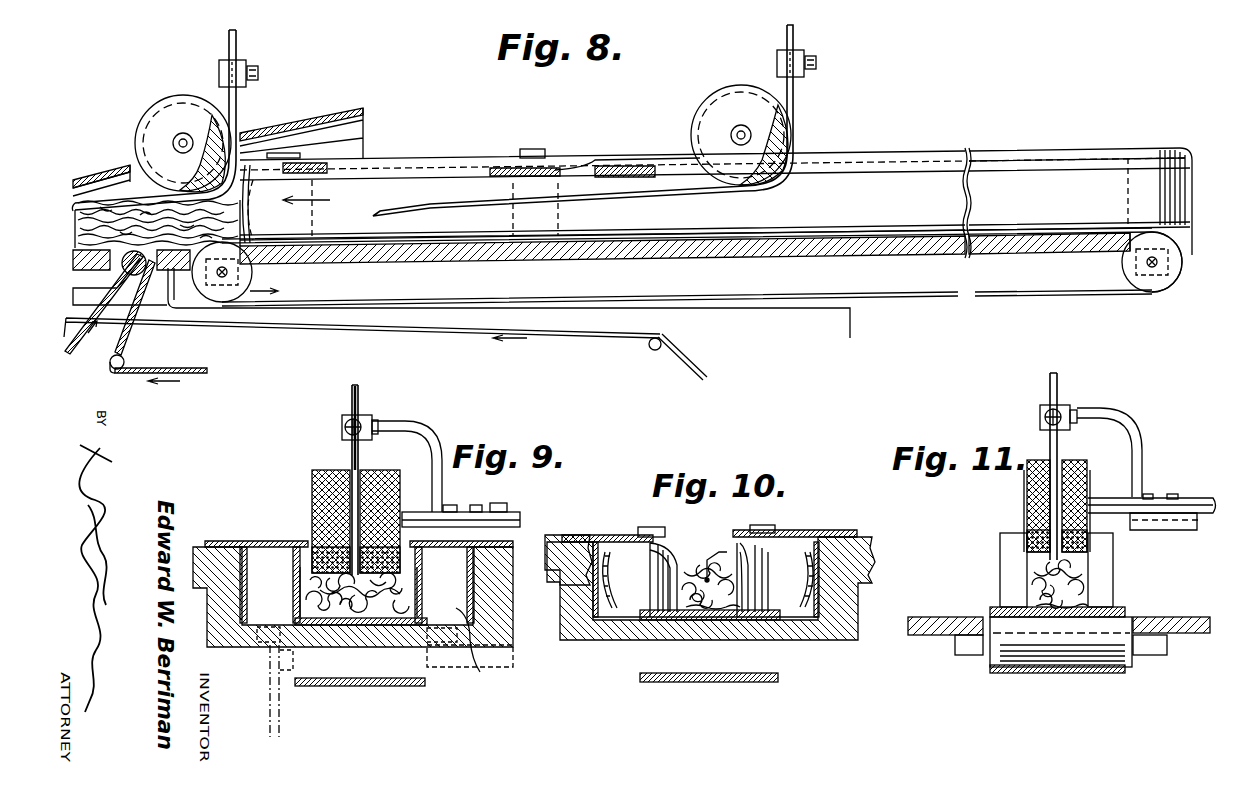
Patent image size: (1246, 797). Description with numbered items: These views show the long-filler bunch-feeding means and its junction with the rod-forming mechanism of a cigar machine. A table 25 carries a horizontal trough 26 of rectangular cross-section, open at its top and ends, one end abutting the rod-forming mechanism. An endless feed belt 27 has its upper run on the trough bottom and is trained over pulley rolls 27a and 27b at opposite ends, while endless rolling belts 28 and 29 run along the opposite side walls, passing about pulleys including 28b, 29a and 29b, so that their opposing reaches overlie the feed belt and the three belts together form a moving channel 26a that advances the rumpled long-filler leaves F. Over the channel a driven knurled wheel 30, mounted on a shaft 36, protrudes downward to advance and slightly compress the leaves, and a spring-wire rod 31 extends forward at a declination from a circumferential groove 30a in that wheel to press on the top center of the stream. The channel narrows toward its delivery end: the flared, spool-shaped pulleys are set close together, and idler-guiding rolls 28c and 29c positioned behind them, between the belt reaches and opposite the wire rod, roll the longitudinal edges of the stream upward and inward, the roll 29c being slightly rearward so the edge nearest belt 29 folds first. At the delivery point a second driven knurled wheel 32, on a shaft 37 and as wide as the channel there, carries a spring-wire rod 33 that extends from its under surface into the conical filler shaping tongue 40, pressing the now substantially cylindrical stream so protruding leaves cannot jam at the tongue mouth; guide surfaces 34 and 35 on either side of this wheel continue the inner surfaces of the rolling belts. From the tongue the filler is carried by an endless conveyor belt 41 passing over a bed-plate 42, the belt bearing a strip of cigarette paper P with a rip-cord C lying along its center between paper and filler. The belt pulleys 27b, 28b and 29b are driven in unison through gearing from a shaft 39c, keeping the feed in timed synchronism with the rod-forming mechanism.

In FIG. 8, the table 25 is at (548, 256).
In FIG. 9, the table 25 is at (518, 542).
In FIG. 10, the table 25 is at (860, 545).
In FIG. 11, the table 25 is at (1190, 616).
In FIG. 9, the horizontal trough 26 is at (240, 645).
In FIG. 10, the horizontal trough 26 is at (830, 615).
In FIG. 8, the moving channel 26a is at (910, 184).
In FIG. 9, the moving channel 26a is at (418, 576).
In FIG. 10, the moving channel 26a is at (703, 540).
In FIG. 8, the endless feed belt 27 is at (1008, 290).
In FIG. 9, the endless feed belt 27 is at (316, 640).
In FIG. 10, the endless feed belt 27 is at (656, 646).
In FIG. 11, the endless feed belt 27 is at (1125, 612).
In FIG. 8, the pulley roll 27a is at (254, 278).
In FIG. 11, the pulley roll 27a is at (993, 676).
In FIG. 8, the pulley roll 27b is at (1162, 286).
In FIG. 9, the pulley roll 27b is at (434, 685).
In FIG. 9, the endless rolling belt 28 is at (296, 548).
In FIG. 10, the endless rolling belt 28 is at (630, 590).
In FIG. 9, the pulley 28b is at (250, 542).
In FIG. 10, the idler-guiding roll 28c is at (628, 548).
In FIG. 8, the endless rolling belt 29 is at (1040, 174).
In FIG. 9, the endless rolling belt 29 is at (474, 649).
In FIG. 10, the endless rolling belt 29 is at (800, 607).
In FIG. 8, the pulley 29a is at (318, 140).
In FIG. 8, the pulley 29b is at (1180, 148).
In FIG. 9, the pulley 29b is at (464, 505).
In FIG. 8, the idler-guiding roll 29c is at (570, 170).
In FIG. 10, the idler-guiding roll 29c is at (797, 530).
In FIG. 8, the driven knurled wheel 30 is at (700, 124).
In FIG. 9, the driven knurled wheel 30 is at (312, 494).
In FIG. 8, the circumferential groove 30a is at (742, 86).
In FIG. 9, the circumferential groove 30a is at (350, 462).
In FIG. 8, the spring-wire rod 31 is at (796, 101).
In FIG. 9, the spring-wire rod 31 is at (366, 460).
In FIG. 10, the spring-wire rod 31 is at (718, 550).
In FIG. 8, the second driven knurled wheel 32 is at (158, 112).
In FIG. 11, the second driven knurled wheel 32 is at (1087, 463).
In FIG. 8, the spring-wire rod 33 is at (248, 101).
In FIG. 11, the spring-wire rod 33 is at (1059, 447).
In FIG. 11, the guide surface 34 is at (1005, 565).
In FIG. 8, the guide surface 35 is at (157, 224).
In FIG. 11, the guide surface 35 is at (1112, 566).
In FIG. 8, the shaft 36 is at (738, 132).
In FIG. 9, the shaft 36 is at (411, 511).
In FIG. 8, the shaft 37 is at (180, 142).
In FIG. 11, the shaft 37 is at (1193, 500).
In FIG. 9, the shaft 39c is at (281, 714).
In FIG. 8, the conical filler shaping tongue 40 is at (102, 182).
In FIG. 11, the conical filler shaping tongue 40 is at (1020, 529).
In FIG. 8, the endless conveyor belt 41 is at (70, 352).
In FIG. 8, the bed-plate 42 is at (75, 262).
In FIG. 8, the rumpled long-filler leaves F is at (74, 223).
In FIG. 9, the rumpled long-filler leaves F is at (357, 619).
In FIG. 10, the rumpled long-filler leaves F is at (711, 613).
In FIG. 11, the rumpled long-filler leaves F is at (1085, 593).
In FIG. 8, the cigarette paper strip P is at (196, 366).
In FIG. 8, the rip-cord C is at (456, 337).